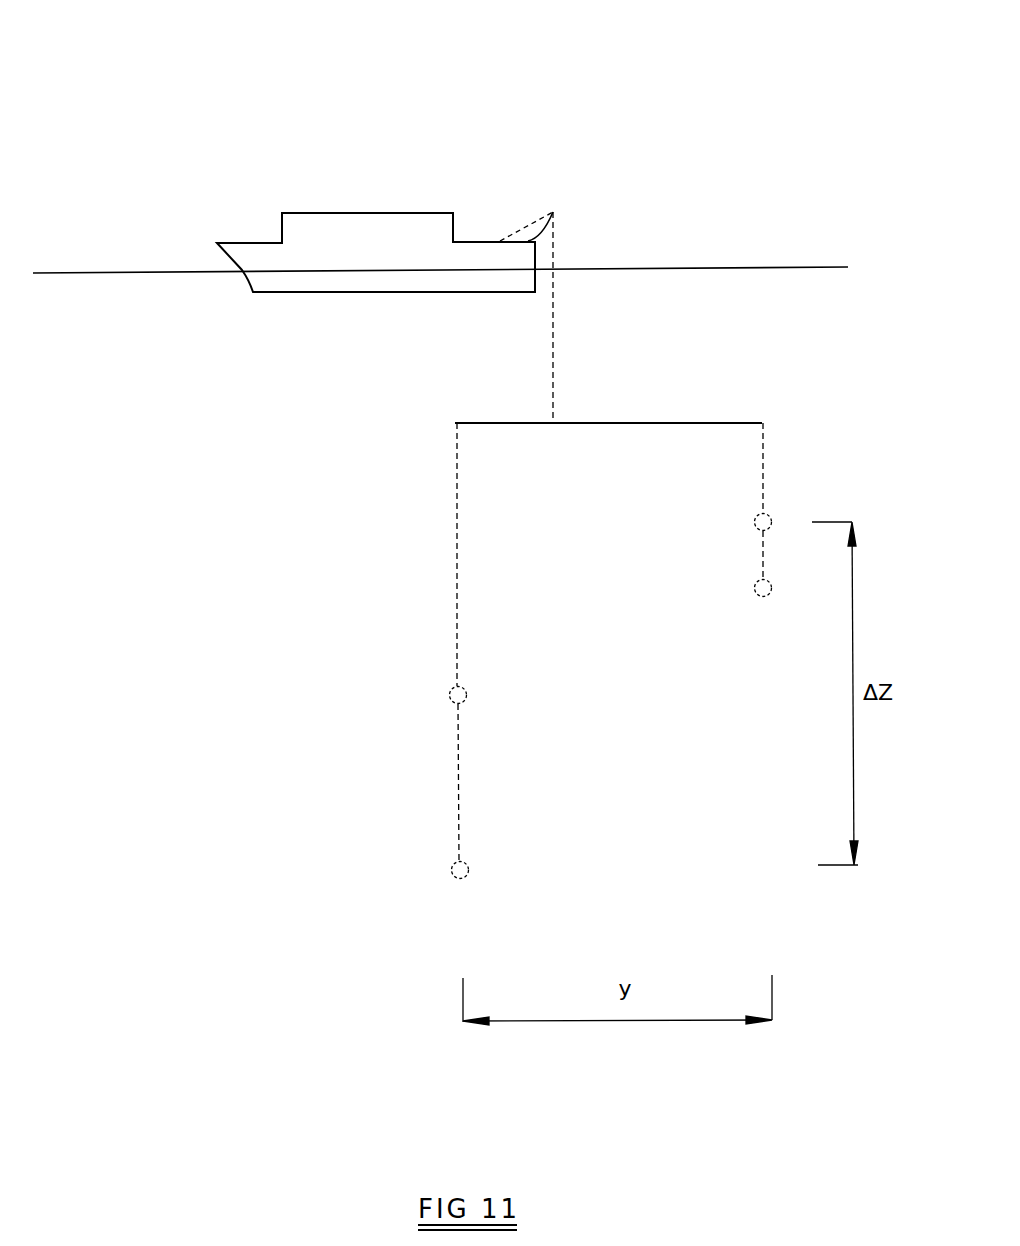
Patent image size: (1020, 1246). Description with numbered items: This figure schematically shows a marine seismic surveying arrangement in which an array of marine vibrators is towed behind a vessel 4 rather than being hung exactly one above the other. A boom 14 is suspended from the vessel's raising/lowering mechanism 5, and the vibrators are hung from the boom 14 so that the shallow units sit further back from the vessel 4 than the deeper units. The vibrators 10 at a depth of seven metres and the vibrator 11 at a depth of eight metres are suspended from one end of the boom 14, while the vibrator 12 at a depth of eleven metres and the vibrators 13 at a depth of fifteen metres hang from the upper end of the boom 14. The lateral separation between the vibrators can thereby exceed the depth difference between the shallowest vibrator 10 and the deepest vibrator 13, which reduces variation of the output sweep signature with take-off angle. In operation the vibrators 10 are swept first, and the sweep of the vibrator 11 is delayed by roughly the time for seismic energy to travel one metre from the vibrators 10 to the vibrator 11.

The vessel 4 is at (407, 212).
The raising/lowering mechanism 5 is at (553, 212).
The boom 14 is at (582, 410).
The vibrators 10 is at (773, 518).
The vibrator 11 is at (775, 587).
The vibrator 12 is at (468, 693).
The vibrators 13 is at (468, 872).